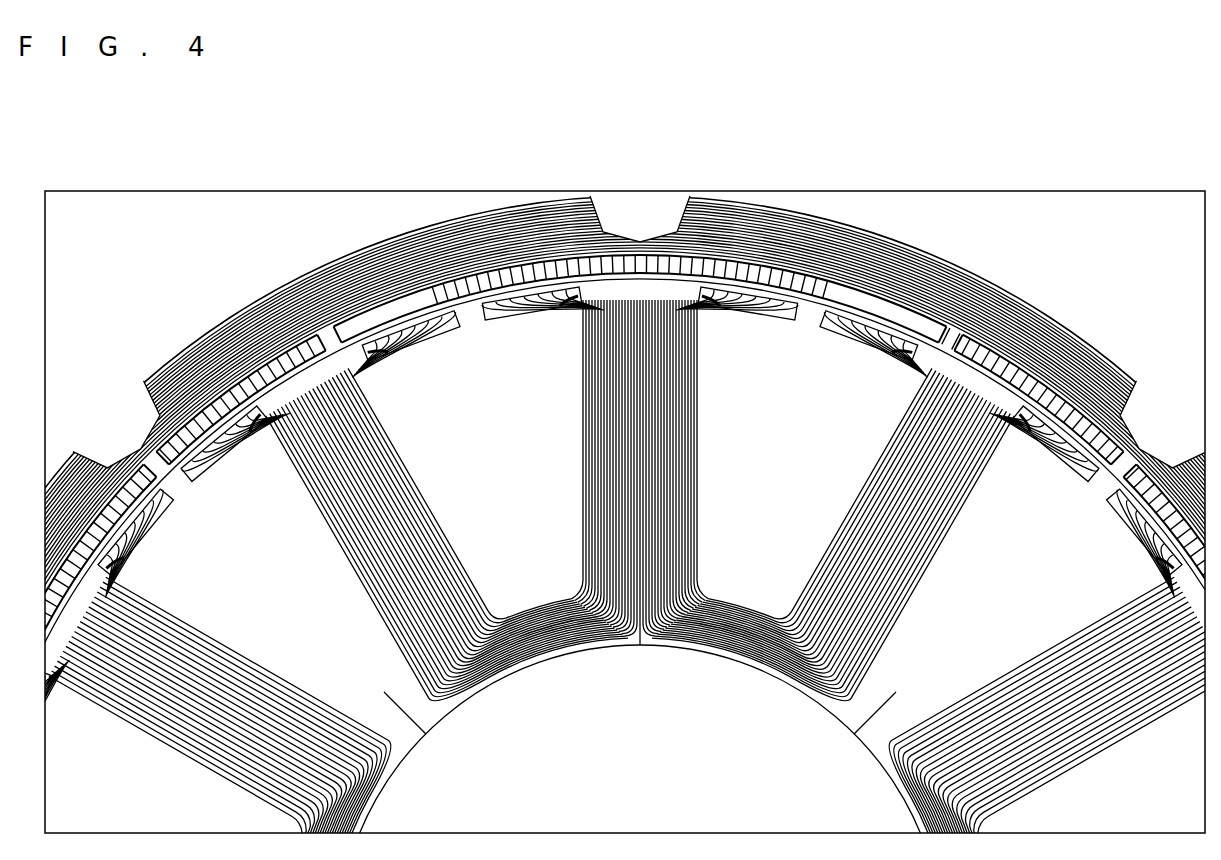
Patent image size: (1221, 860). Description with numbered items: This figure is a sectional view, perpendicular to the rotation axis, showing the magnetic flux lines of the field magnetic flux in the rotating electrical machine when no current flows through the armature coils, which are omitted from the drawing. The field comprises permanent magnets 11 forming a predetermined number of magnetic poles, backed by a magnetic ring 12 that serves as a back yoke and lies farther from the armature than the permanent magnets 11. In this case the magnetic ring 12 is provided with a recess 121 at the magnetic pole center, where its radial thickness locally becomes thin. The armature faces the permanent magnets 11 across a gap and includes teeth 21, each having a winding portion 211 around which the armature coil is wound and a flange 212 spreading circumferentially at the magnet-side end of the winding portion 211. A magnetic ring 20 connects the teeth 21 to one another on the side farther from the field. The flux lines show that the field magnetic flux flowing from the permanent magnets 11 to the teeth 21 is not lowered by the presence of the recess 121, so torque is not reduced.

The permanent magnet 11 is at (165, 478).
The magnetic ring 12 is at (1114, 372).
The recess 121 is at (640, 236).
The magnetic ring 20 is at (430, 712).
The teeth 21 is at (610, 573).
The winding portion 211 is at (412, 422).
The flange 212 is at (410, 352).